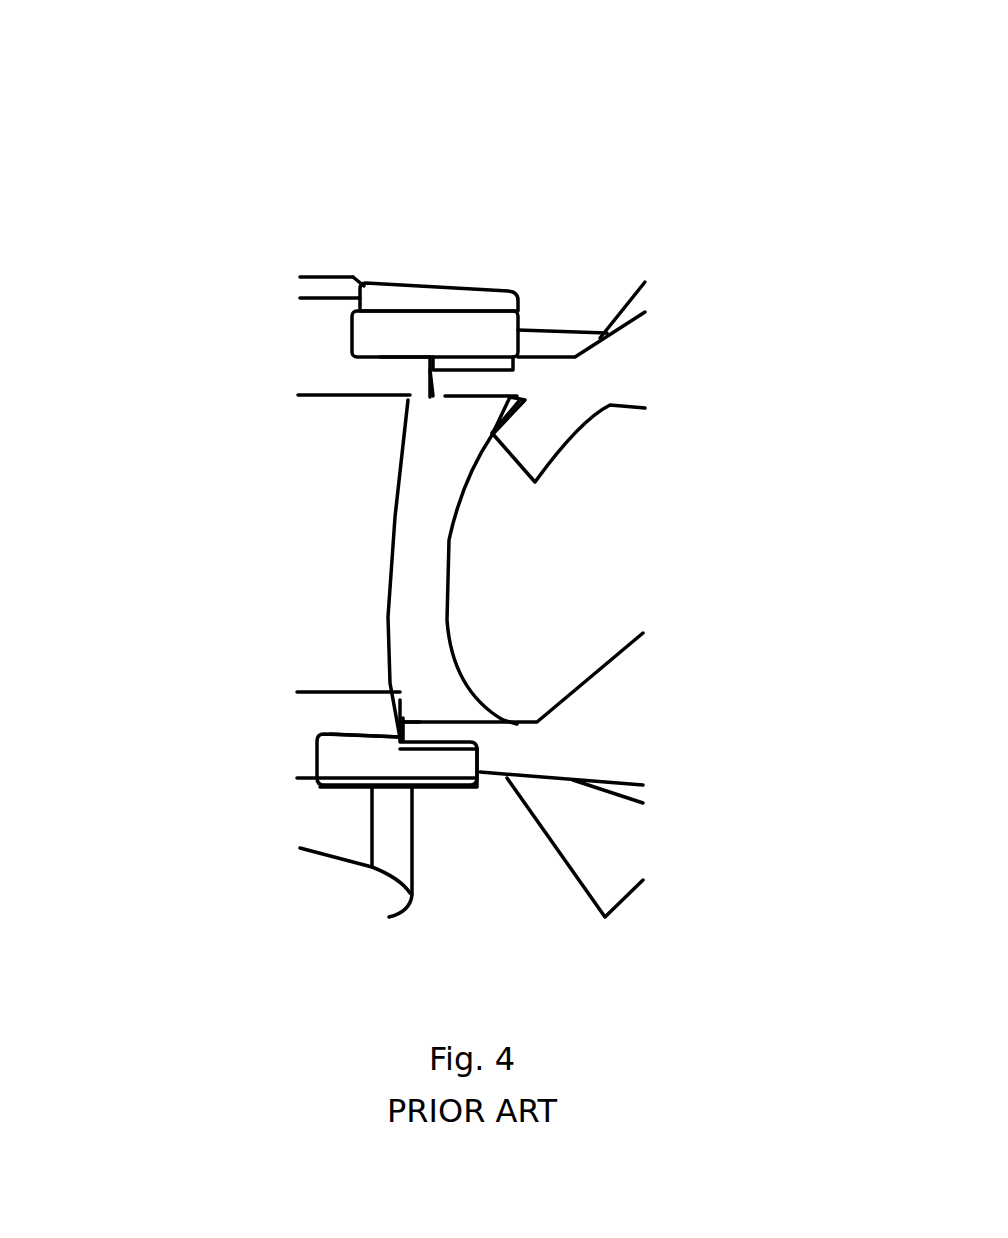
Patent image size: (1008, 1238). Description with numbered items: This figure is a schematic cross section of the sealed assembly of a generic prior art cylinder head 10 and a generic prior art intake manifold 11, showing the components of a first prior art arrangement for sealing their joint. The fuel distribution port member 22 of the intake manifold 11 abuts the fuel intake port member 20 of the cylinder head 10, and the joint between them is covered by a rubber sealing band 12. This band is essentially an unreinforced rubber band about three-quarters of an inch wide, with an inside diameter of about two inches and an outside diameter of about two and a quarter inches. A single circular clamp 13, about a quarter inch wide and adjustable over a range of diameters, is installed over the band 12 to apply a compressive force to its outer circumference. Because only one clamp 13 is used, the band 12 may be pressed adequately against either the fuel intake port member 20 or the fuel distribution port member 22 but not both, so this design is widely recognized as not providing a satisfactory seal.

The cylinder head 10 is at (313, 335).
The intake manifold 11 is at (631, 382).
The rubber sealing band 12 is at (413, 335).
The circular clamp 13 is at (472, 302).
The fuel intake port member 20 is at (387, 370).
The fuel distribution port member 22 is at (445, 383).